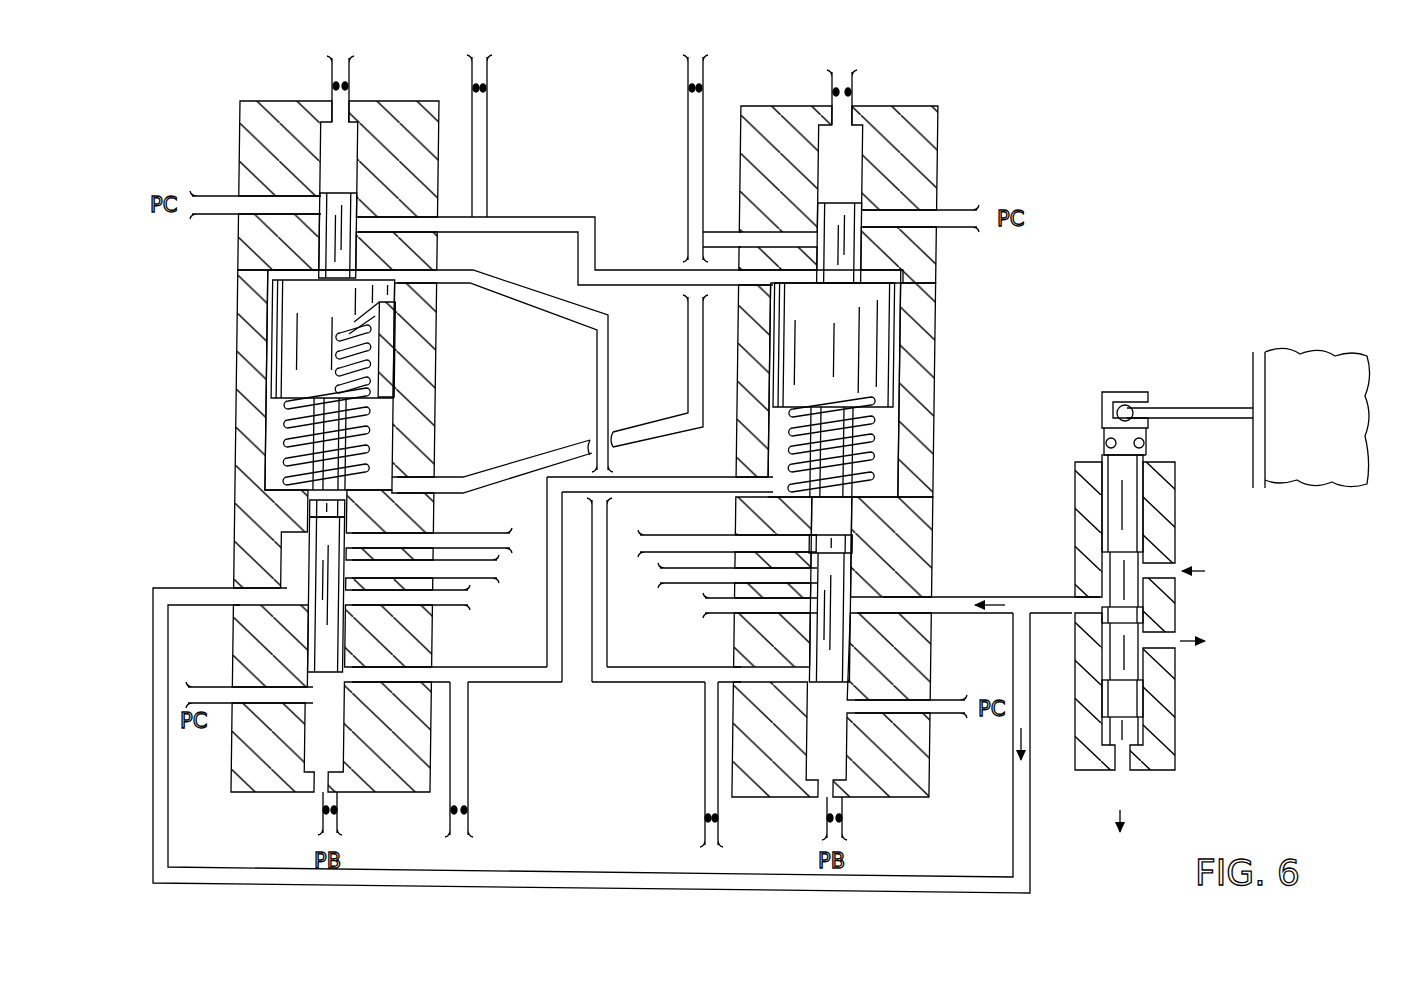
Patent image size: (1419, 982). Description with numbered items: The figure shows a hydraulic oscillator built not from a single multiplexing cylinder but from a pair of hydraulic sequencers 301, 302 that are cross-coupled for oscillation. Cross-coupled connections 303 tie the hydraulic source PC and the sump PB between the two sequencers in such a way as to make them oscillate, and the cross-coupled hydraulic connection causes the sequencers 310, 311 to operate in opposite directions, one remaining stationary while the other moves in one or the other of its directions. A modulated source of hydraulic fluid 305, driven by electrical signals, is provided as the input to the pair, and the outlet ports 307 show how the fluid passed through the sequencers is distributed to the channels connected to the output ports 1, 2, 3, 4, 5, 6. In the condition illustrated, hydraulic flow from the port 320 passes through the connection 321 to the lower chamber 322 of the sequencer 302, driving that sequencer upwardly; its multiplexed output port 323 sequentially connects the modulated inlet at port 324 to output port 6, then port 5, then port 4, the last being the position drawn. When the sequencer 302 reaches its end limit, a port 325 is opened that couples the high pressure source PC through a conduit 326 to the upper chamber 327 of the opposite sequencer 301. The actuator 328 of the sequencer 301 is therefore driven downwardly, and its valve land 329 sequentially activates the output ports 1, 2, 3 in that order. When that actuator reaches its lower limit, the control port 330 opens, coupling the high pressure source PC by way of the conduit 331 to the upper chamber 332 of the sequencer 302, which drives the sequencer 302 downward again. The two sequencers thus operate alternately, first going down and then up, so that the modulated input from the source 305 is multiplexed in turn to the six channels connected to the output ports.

The sequencer 301 is at (272, 101).
The sequencer 302 is at (938, 148).
The cross-coupled connections 303 is at (573, 120).
The modulated source of hydraulic fluid 305 is at (1220, 314).
The outlet ports 307 is at (634, 632).
The sequencer 310 is at (435, 422).
The sequencer 311 is at (936, 373).
The port 320 is at (355, 672).
The connection 321 is at (518, 682).
The lower chamber 322 is at (892, 469).
The multiplexed output port 323 is at (862, 543).
The port 324 is at (930, 606).
The port 325 is at (742, 666).
The conduit 326 is at (673, 682).
The upper chamber 327 is at (272, 272).
The actuator 328 is at (395, 293).
The valve land 329 is at (313, 513).
The control port 330 is at (372, 228).
The conduit 331 is at (633, 276).
The upper chamber 332 is at (898, 290).
The output port 1 is at (444, 540).
The output port 2 is at (438, 570).
The output port 3 is at (423, 600).
The output port 4 is at (714, 542).
The output port 5 is at (723, 574).
The output port 6 is at (746, 605).